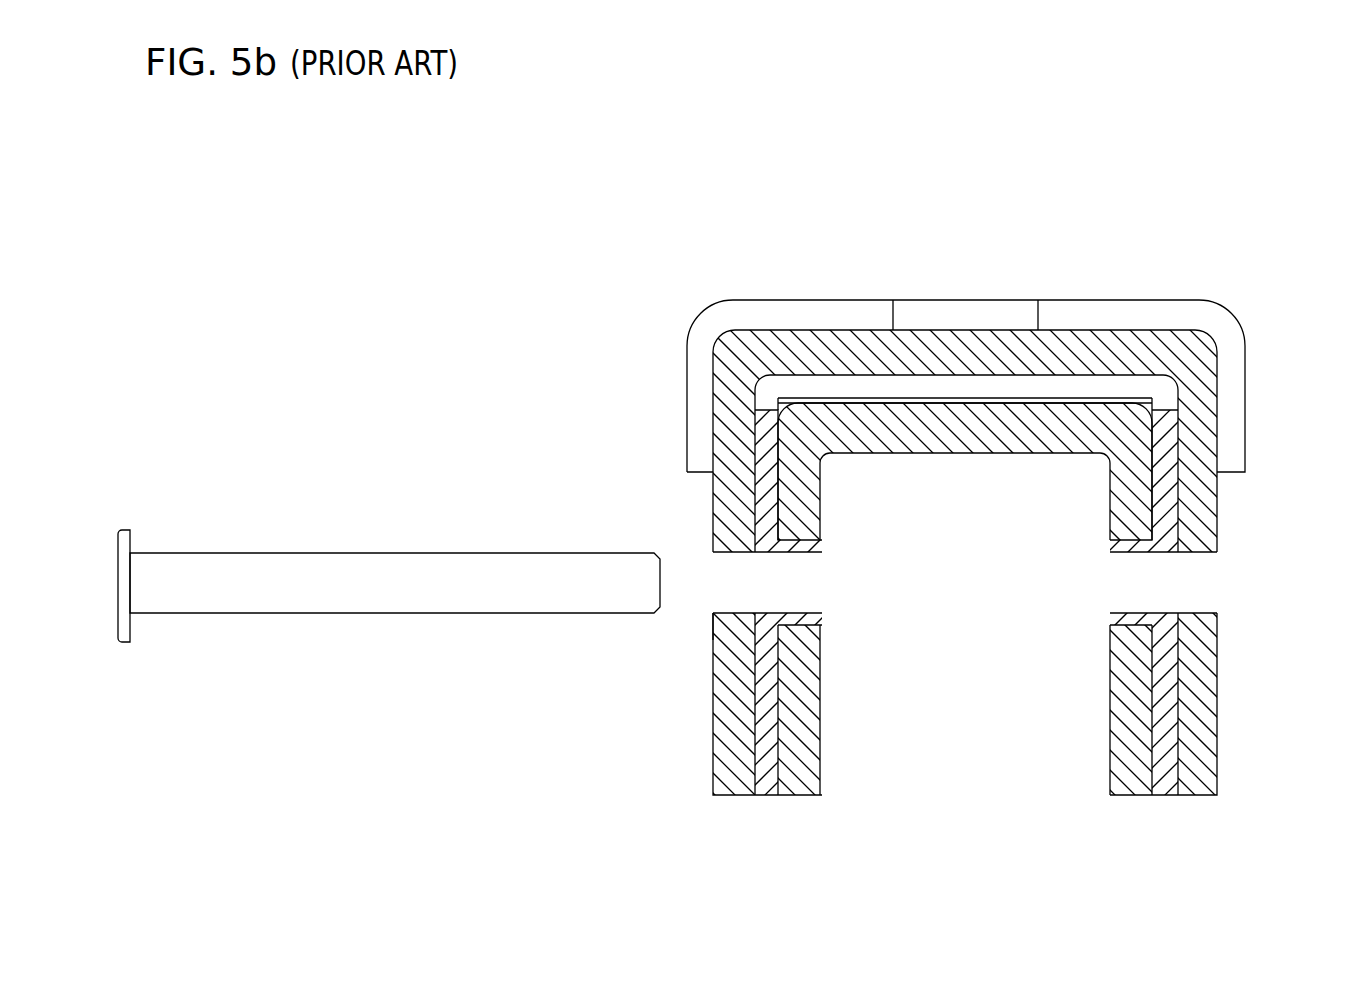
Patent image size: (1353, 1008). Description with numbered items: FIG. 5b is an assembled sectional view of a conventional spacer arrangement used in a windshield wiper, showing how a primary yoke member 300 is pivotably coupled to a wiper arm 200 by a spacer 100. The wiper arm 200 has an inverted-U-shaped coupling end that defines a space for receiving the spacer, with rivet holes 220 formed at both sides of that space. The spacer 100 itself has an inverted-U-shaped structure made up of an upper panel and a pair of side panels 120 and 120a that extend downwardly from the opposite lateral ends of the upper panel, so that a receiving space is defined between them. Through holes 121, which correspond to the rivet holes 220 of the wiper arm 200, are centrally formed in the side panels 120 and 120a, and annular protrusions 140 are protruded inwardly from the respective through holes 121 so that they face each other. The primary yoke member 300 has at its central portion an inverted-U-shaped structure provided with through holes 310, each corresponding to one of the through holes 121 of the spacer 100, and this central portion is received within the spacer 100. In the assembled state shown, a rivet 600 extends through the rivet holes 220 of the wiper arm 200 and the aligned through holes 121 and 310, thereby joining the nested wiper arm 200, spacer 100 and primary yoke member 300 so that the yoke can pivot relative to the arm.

The spacer 100 is at (957, 398).
The side panel 120 is at (768, 787).
The side panel 120a is at (1167, 787).
The through hole 121 is at (765, 567).
The annular protrusion 140 is at (817, 622).
The wiper arm 200 is at (1218, 707).
The rivet hole 220 is at (724, 621).
The primary yoke member 300 is at (1115, 763).
The through hole 310 is at (1127, 632).
The rivet 600 is at (265, 605).